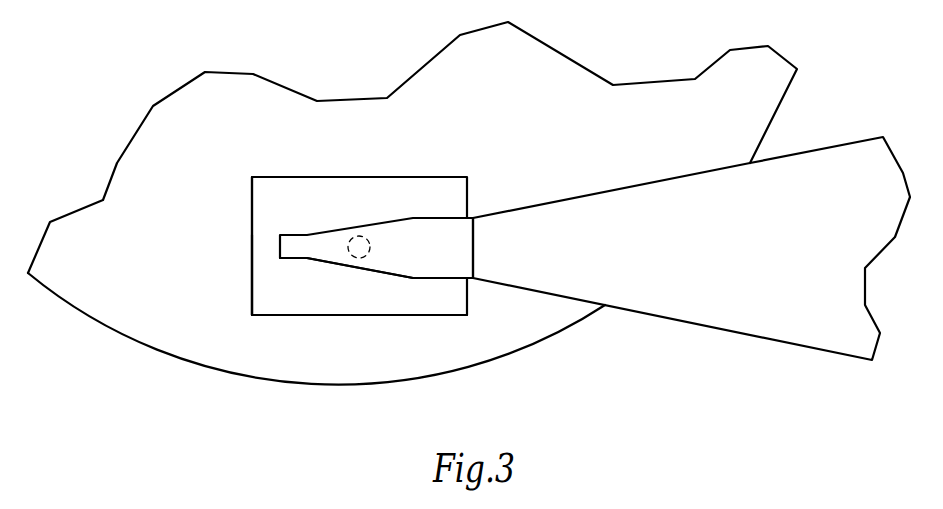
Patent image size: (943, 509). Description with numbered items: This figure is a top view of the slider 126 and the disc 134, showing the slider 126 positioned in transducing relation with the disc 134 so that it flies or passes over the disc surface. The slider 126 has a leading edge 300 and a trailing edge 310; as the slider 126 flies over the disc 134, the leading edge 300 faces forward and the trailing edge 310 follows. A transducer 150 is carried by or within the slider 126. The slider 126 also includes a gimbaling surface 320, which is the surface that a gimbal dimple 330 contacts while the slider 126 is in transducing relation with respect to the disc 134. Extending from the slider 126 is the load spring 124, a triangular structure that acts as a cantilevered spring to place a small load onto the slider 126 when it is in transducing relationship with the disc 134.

The load spring 124 is at (830, 147).
The slider 126 is at (413, 303).
The disc 134 is at (455, 365).
The transducer 150 is at (252, 246).
The leading edge 300 is at (468, 303).
The trailing edge 310 is at (252, 272).
The gimbaling surface 320 is at (317, 303).
The gimbal dimple 330 is at (360, 238).